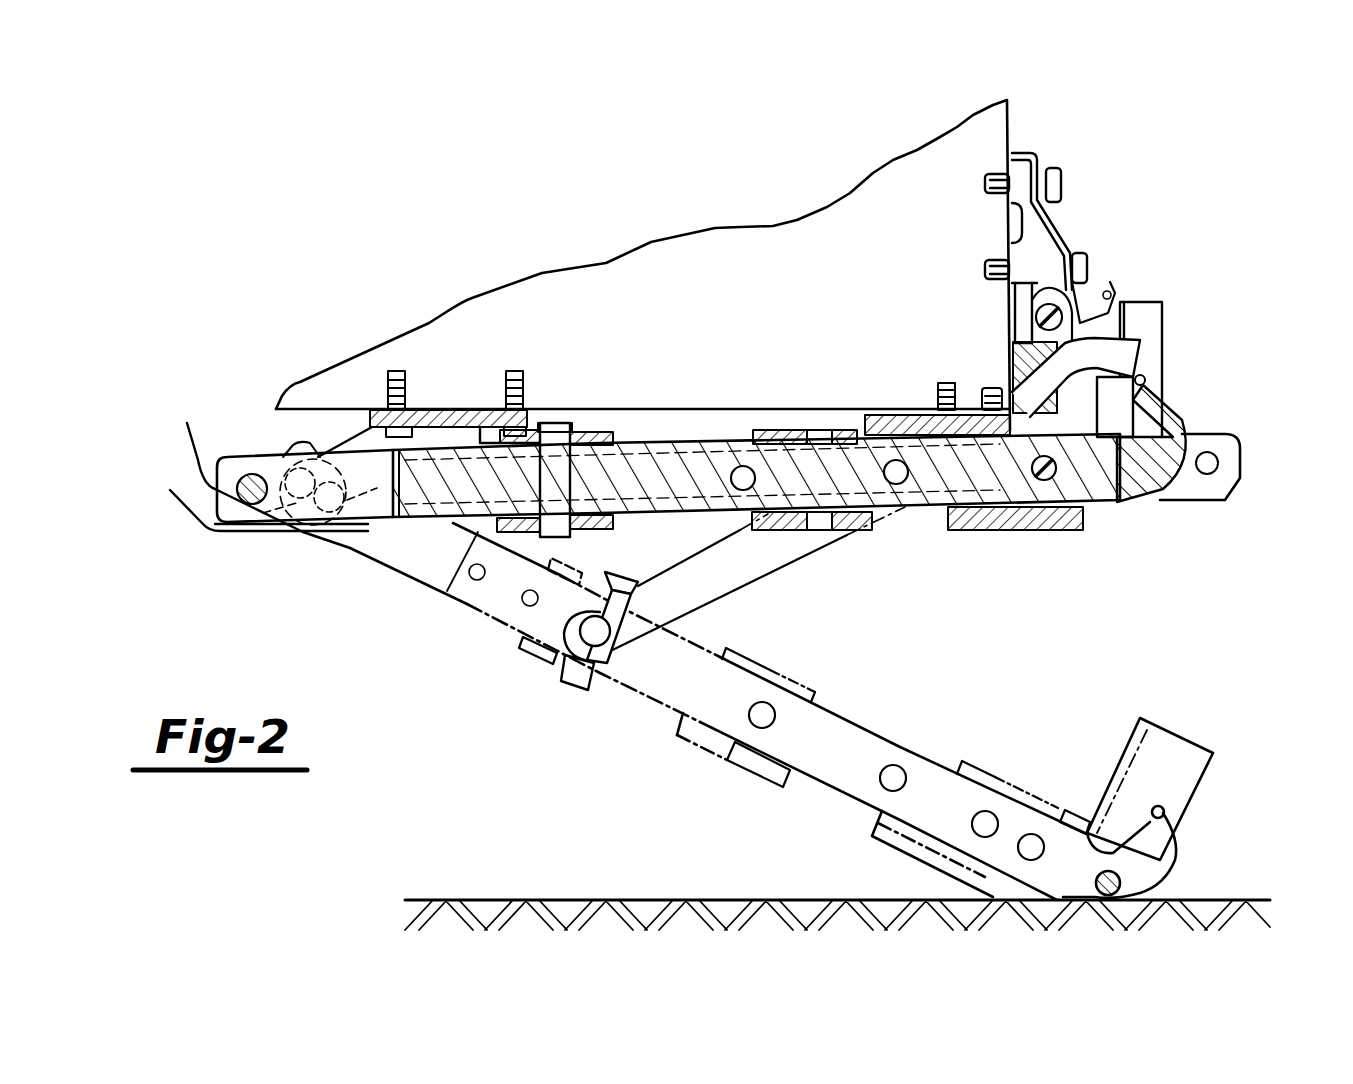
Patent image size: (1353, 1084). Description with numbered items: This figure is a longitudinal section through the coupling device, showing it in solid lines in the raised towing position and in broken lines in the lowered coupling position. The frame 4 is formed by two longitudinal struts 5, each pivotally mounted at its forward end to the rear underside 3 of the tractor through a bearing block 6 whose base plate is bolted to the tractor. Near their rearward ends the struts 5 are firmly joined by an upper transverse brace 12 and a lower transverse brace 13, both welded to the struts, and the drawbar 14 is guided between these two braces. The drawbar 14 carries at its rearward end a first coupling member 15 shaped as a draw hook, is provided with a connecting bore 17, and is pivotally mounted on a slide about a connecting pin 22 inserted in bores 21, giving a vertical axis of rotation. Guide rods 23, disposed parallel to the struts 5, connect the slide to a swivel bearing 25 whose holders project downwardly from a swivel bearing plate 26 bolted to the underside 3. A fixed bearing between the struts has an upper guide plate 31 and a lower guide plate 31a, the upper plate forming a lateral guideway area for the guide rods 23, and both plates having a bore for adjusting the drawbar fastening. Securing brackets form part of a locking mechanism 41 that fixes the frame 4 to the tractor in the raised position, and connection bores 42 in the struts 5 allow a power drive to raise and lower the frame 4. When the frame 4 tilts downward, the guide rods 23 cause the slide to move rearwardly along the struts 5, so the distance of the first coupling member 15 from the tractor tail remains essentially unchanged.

The rear underside 3 is at (640, 407).
The frame 4 is at (838, 763).
The longitudinal strut 5 is at (1213, 488).
The bearing block 6 is at (350, 447).
The upper transverse brace 12 is at (1003, 400).
The lower transverse brace 13 is at (1045, 530).
The drawbar 14 is at (660, 455).
The first coupling member 15 is at (1118, 502).
The connecting bore 17 is at (586, 434).
The bore 21 is at (556, 440).
The connecting pin 22 is at (577, 533).
The guide rod 23 is at (777, 548).
The swivel bearing 25 is at (883, 415).
The swivel bearing plate 26 is at (925, 412).
The upper guide plate 31 is at (795, 430).
The lower guide plate 31a is at (862, 532).
The locking mechanism 41 is at (1118, 332).
The connection bore 42 is at (1210, 462).